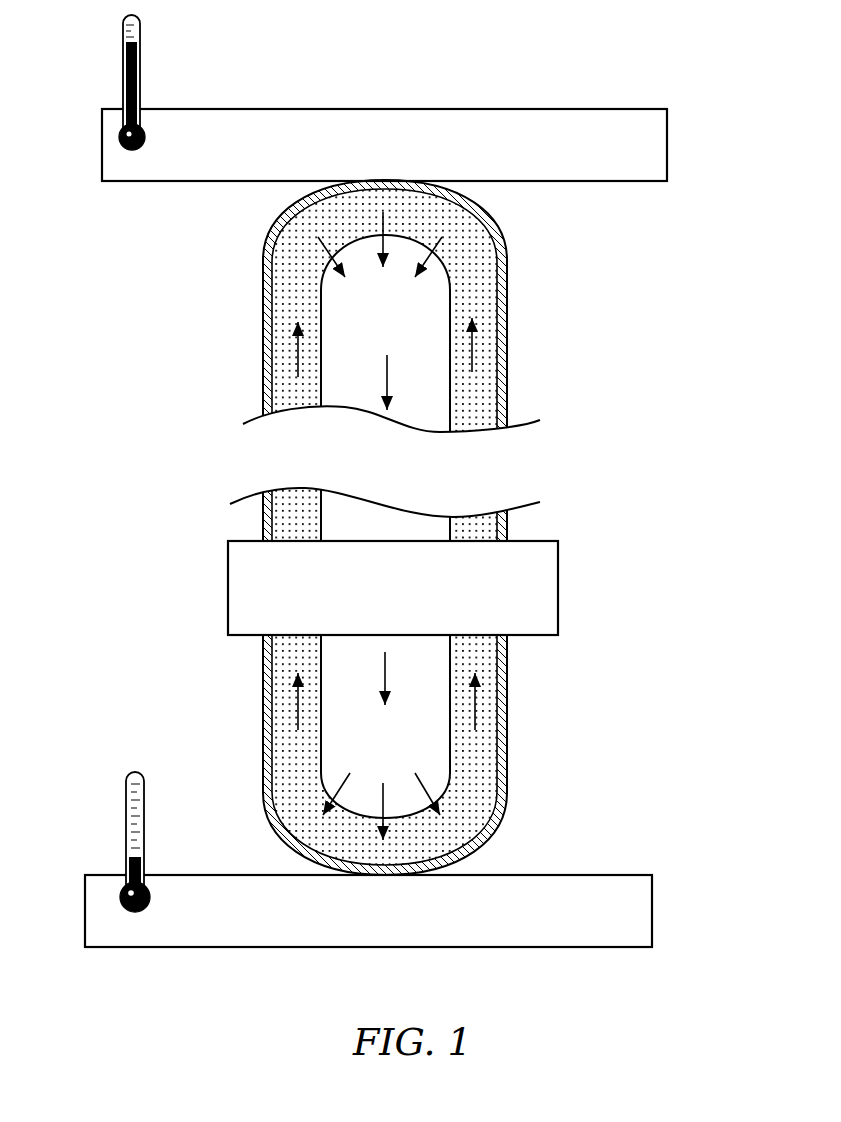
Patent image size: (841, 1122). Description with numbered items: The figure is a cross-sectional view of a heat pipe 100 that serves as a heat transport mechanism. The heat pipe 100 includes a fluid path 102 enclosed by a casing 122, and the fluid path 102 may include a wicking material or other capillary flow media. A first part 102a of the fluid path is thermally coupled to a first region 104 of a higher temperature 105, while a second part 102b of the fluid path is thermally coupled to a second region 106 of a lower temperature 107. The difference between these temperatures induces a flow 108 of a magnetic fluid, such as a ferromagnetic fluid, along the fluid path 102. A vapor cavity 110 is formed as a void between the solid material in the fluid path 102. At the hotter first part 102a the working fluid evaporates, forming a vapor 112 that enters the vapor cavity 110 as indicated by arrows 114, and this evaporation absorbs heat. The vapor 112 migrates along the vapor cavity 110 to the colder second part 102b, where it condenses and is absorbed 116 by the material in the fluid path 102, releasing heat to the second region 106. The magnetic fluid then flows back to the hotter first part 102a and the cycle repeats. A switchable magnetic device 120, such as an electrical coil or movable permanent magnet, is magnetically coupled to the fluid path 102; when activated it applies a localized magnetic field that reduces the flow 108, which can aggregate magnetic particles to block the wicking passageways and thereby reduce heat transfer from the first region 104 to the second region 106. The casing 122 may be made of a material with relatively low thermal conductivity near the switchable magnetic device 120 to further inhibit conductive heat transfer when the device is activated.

The heat pipe 100 is at (508, 352).
The fluid path 102 is at (482, 400).
The first part of the fluid path 102a is at (560, 272).
The second part of the fluid path 102b is at (574, 768).
The first region 104 is at (658, 160).
The higher temperature 105 is at (123, 63).
The second region 106 is at (637, 918).
The lower temperature 107 is at (127, 810).
The flow of magnetic fluid 108 is at (293, 365).
The vapor cavity 110 is at (410, 336).
The vapor 112 is at (390, 388).
The arrows indicating vapor entering the vapor cavity 114 is at (462, 252).
The absorption of condensed vapor 116 is at (330, 800).
The switchable magnetic device 120 is at (552, 587).
The casing 122 is at (267, 285).